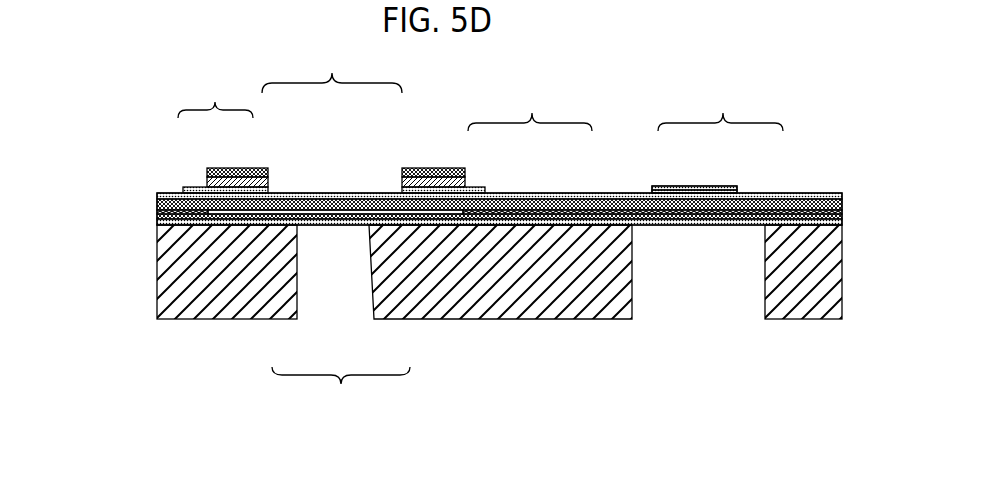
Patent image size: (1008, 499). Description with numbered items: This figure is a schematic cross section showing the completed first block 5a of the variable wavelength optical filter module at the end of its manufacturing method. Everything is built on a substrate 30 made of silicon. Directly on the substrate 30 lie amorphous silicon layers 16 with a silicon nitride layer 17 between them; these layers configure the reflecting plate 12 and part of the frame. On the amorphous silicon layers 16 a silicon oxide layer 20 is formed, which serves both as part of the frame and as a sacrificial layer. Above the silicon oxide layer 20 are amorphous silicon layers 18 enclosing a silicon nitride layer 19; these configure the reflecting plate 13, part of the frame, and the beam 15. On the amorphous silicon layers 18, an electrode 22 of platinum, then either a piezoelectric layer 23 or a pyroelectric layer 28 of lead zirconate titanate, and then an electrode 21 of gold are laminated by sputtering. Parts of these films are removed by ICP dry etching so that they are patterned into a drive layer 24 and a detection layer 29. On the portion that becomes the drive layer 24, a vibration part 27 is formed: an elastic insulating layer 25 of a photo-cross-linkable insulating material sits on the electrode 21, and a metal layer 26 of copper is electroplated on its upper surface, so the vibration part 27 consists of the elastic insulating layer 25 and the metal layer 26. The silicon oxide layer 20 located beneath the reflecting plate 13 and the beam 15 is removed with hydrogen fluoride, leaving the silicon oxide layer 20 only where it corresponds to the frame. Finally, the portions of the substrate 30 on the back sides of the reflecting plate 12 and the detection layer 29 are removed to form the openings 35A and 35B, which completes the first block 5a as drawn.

The first block 5a is at (152, 202).
The reflecting plate 12 is at (341, 392).
The reflecting plate 13 is at (332, 66).
The beam 15 is at (233, 204).
The amorphous silicon layers 16 is at (343, 226).
The silicon nitride layer 17 is at (352, 226).
The amorphous silicon layers 18 is at (307, 196).
The silicon nitride layer 19 is at (343, 199).
The silicon oxide layer 20 is at (168, 193).
The electrode 21 is at (463, 188).
The electrode 22 is at (488, 197).
The piezoelectric layer 23 is at (484, 193).
The drive layer 24 is at (530, 106).
The elastic insulating layer 25 is at (212, 178).
The metal layer 26 is at (232, 170).
The vibration part 27 is at (215, 95).
The pyroelectric layer 28 is at (720, 190).
The detection layer 29 is at (717, 137).
The substrate 30 is at (183, 260).
The opening 35A is at (310, 268).
The opening 35B is at (698, 267).